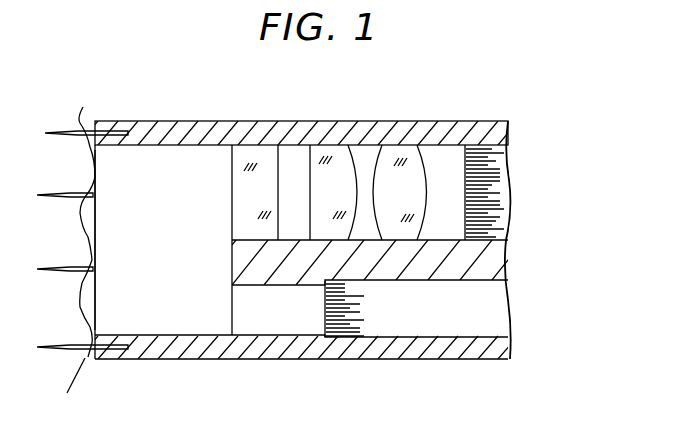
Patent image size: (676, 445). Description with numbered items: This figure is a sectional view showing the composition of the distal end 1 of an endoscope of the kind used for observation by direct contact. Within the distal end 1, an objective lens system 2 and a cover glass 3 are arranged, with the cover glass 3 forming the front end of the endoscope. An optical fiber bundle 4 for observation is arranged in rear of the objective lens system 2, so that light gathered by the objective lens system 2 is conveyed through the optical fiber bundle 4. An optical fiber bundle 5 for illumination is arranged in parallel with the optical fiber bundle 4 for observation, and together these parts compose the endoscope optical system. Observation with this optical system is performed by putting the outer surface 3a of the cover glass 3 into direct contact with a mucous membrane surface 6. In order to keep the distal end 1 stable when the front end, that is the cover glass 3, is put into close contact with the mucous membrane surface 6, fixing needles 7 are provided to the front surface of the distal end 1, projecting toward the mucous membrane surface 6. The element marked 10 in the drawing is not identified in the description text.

The distal end 1 is at (200, 128).
The objective lens system 2 is at (397, 158).
The cover glass 3 is at (167, 323).
The outer surface of the cover glass 3a is at (96, 286).
The optical fiber bundle for observation 4 is at (495, 190).
The optical fiber bundle for illumination 5 is at (490, 314).
The mucous membrane surface 6 is at (80, 127).
The fixing needles 7 is at (72, 353).
The fiber end 10 is at (87, 362).